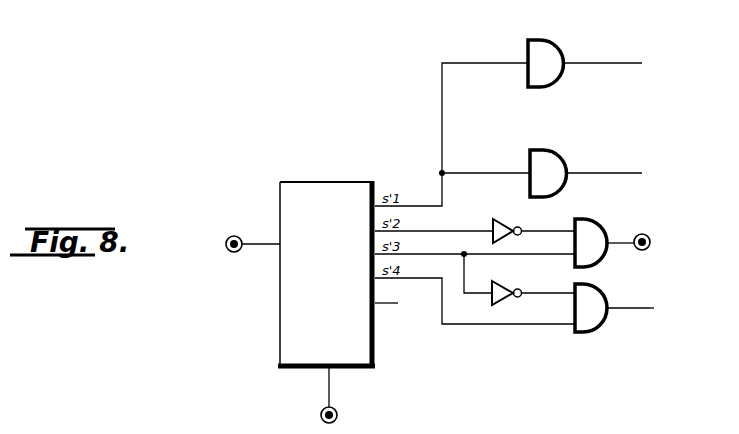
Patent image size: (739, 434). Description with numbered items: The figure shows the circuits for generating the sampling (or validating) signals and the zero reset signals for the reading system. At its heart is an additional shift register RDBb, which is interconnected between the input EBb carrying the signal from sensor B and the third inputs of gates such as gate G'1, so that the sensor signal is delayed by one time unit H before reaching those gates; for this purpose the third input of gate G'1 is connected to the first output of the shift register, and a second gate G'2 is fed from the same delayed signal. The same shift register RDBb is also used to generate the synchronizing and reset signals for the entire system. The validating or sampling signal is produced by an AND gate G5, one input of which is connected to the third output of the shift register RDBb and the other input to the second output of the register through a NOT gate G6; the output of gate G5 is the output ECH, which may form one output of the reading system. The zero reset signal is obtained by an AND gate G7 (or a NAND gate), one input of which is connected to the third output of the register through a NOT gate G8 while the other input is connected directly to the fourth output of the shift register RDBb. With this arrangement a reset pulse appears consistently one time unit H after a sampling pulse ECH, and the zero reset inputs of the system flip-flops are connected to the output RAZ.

The additional shift register RDBb is at (352, 290).
The input EBb is at (231, 244).
The time unit H is at (337, 396).
The gate G'1 is at (585, 60).
The AND gate G'2 is at (586, 169).
The AND gate G5 is at (597, 223).
The NOT gate G6 is at (534, 221).
The AND gate G7 is at (598, 318).
The NOT gate G8 is at (533, 285).
The validating or sampling output ECH is at (662, 241).
The zero reset output RAZ is at (669, 308).